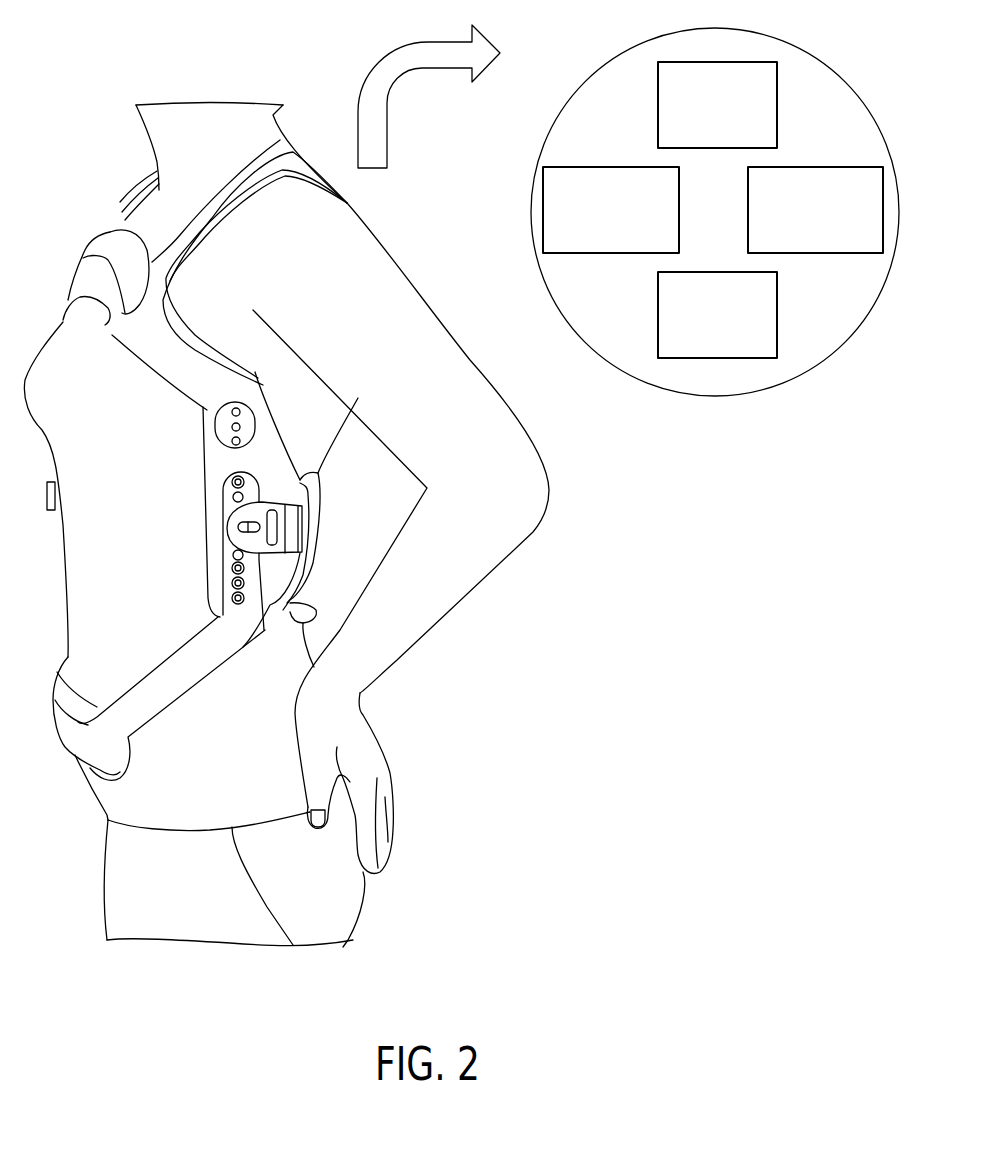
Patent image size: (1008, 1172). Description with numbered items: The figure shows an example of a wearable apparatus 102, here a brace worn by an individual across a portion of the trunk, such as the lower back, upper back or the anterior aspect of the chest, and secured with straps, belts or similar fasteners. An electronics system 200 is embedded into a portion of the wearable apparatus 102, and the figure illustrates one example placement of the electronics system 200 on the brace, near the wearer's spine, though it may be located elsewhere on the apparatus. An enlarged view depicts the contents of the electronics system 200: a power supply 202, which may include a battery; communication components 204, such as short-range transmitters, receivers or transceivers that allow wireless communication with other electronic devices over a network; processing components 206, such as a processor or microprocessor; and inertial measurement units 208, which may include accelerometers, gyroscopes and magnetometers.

The wearable apparatus 102 is at (123, 310).
The electronics system 200 is at (338, 540).
The power supply 202 is at (658, 130).
The communication components 204 is at (543, 218).
The processing components 206 is at (838, 253).
The inertial measurement units 208 is at (705, 358).